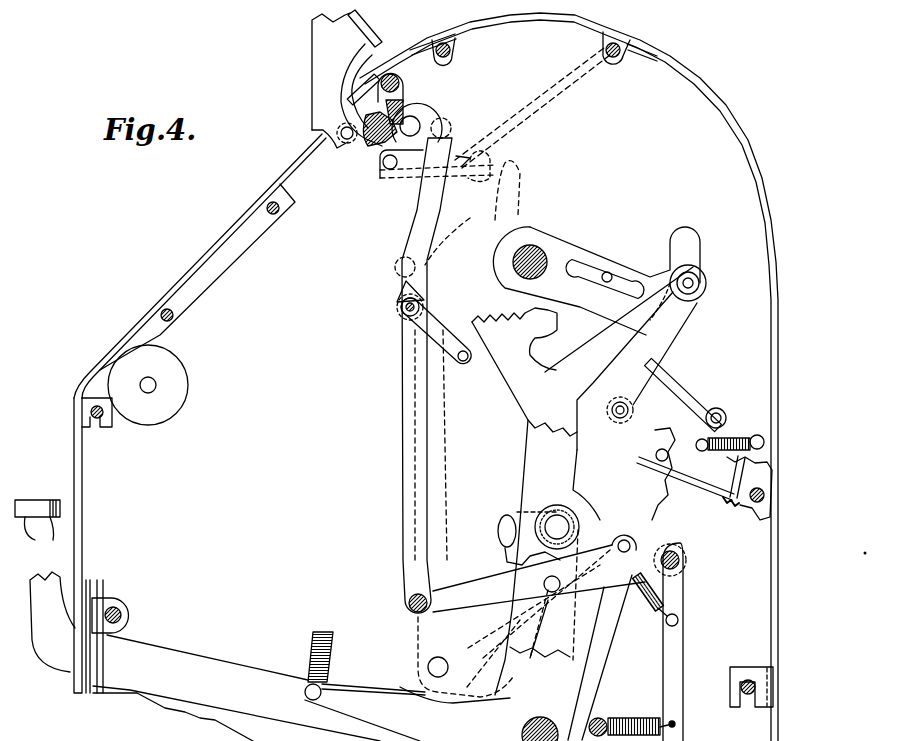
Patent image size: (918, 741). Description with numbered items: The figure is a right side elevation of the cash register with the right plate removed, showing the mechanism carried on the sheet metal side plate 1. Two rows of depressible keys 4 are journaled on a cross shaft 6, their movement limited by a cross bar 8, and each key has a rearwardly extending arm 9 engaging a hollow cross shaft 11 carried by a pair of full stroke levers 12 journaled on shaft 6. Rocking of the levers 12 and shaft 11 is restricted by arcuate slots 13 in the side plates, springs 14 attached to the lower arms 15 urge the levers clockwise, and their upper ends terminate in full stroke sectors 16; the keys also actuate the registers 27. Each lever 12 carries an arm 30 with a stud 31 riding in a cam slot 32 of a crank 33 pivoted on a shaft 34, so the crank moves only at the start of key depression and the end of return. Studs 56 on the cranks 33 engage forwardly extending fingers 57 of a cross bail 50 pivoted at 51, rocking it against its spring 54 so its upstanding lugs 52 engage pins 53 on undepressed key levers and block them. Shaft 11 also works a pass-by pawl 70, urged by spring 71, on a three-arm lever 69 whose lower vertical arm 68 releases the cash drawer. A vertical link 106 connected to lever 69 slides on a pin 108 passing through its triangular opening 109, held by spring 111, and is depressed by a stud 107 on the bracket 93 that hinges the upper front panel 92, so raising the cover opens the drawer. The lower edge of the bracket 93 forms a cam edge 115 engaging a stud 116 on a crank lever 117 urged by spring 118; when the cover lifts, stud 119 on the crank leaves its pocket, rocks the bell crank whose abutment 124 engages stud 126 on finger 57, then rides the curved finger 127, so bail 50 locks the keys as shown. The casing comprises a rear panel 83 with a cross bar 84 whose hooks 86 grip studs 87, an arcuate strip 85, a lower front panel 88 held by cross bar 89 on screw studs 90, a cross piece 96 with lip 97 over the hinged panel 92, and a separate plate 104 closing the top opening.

The right side plate 1 is at (746, 195).
The depressible key 4 is at (38, 506).
The cross shaft 6 is at (536, 728).
The cross bar 8 is at (95, 661).
The rearwardly and upwardly extending arm 9 is at (584, 634).
The hollow cross shaft 11 is at (556, 512).
The full stroke lever 12 is at (541, 412).
The arcuate slot 13 is at (506, 516).
The spring 14 is at (327, 634).
The lower arm 15 is at (369, 690).
The full stroke sector 16 is at (514, 339).
The register 27 is at (172, 368).
The rearwardly and upwardly extending arm 30 is at (603, 351).
The stud 31 is at (701, 283).
The cam slot 32 is at (610, 273).
The crank 33 is at (569, 248).
The shaft 34 is at (526, 265).
The cross bail 50 is at (700, 482).
The pivot 51 is at (757, 506).
The upstanding lug 52 is at (656, 466).
The pin 53 is at (655, 454).
The spring 54 is at (748, 437).
The stud 56 is at (618, 416).
The forwardly extending finger 57 is at (681, 383).
The lower vertical arm 68 is at (681, 635).
The three-arm lever 69 is at (684, 584).
The pass-by pawl 70 is at (510, 558).
The spring 71 is at (648, 598).
The rear panel 83 is at (746, 144).
The cross bar 84 is at (772, 708).
The arcuate strip 85 is at (456, 36).
The hook 86 is at (749, 674).
The stud 87 is at (742, 690).
The lower front panel 88 is at (83, 517).
The cross bar 89 is at (214, 252).
The screw stud 90 is at (99, 419).
The upper front panel 92 is at (364, 33).
The bracket 93 is at (314, 106).
The cross piece 96 is at (415, 47).
The lip 97 is at (363, 76).
The separate plate 104 is at (608, 33).
The vertical link 106 is at (426, 232).
The stud 107 is at (449, 124).
The pin 108 is at (402, 311).
The triangular shaped opening 109 is at (396, 302).
The spring 111 is at (424, 338).
The cam edge 115 is at (318, 133).
The stud 116 is at (412, 122).
The crank lever 117 is at (397, 178).
The spring 118 is at (559, 100).
The stud 119 is at (478, 184).
The abutment 124 is at (702, 402).
The stud 126 is at (720, 414).
The curved finger 127 is at (500, 214).